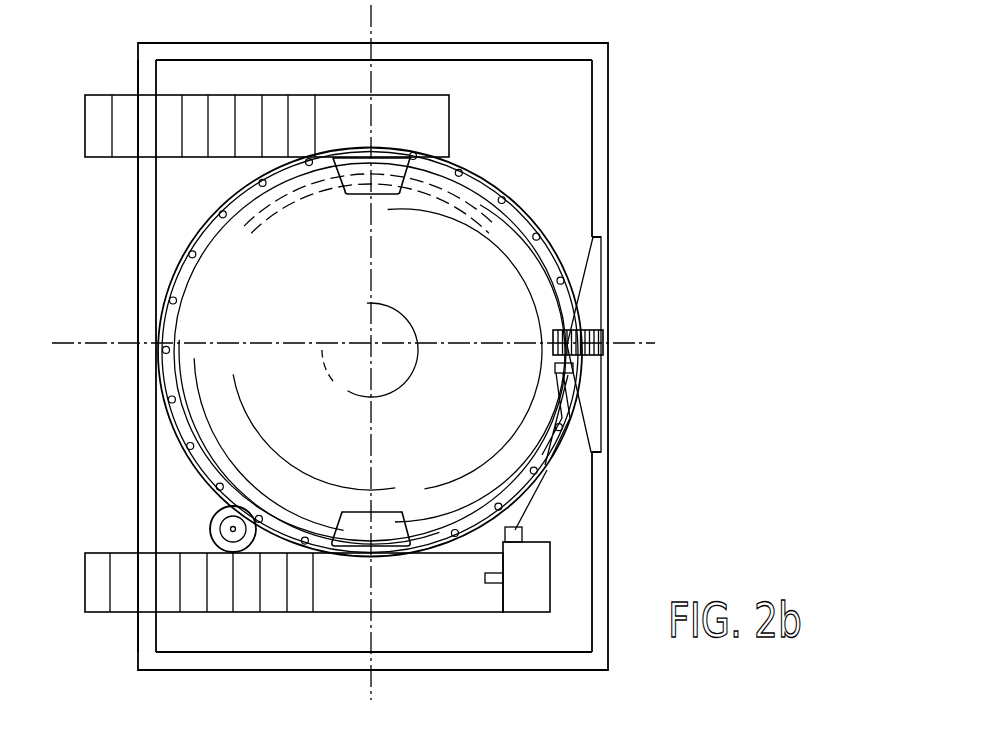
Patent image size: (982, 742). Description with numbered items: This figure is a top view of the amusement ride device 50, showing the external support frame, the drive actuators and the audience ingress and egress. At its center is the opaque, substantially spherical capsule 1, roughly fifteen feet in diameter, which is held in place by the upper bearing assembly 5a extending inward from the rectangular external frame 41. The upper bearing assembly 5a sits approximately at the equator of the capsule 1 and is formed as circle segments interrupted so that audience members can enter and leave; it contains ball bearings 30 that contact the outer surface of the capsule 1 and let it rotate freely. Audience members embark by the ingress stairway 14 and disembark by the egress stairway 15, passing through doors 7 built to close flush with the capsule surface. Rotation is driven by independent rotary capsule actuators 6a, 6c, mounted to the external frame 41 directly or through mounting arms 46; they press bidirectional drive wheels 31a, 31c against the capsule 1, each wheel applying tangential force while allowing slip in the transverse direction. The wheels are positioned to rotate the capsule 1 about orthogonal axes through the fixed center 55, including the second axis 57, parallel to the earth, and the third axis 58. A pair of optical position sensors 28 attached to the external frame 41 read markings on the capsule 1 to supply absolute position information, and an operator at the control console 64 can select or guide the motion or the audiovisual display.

The amusement ride device 50 is at (115, 69).
The external frame 41 is at (138, 263).
The ingress stairway 14 is at (115, 157).
The egress stairway 15 is at (120, 553).
The control console 64 is at (540, 587).
The upper bearing assembly 5a is at (543, 210).
The ball bearings 30 is at (464, 170).
The capsule 1 is at (431, 287).
The doors 7 is at (342, 190).
The fixed center 55 is at (368, 347).
The mounting arms 46 is at (595, 271).
The rotary capsule actuator 6c is at (598, 329).
The bidirectional drive wheel 31c is at (606, 354).
The optical position sensors 28 is at (520, 537).
The rotary capsule actuator 6a is at (205, 521).
The bidirectional drive wheel 31a is at (212, 541).
The third axis 58 is at (373, 78).
The second axis 57 is at (653, 344).